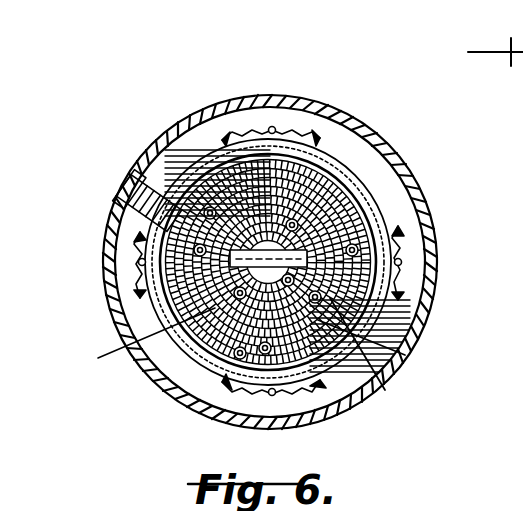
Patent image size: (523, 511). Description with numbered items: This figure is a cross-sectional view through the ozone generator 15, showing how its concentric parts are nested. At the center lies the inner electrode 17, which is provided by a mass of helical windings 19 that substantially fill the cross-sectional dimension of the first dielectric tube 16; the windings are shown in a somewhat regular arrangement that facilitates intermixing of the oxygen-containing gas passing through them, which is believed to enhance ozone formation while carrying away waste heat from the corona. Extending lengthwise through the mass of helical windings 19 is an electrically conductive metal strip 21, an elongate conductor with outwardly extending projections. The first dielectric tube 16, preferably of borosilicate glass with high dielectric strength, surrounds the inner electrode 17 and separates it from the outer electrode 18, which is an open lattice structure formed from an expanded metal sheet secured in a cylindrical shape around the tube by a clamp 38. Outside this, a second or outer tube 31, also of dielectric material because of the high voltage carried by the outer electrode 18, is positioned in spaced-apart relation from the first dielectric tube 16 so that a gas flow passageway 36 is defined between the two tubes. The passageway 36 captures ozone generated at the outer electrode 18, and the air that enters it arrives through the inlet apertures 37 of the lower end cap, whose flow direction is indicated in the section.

The ozone generator 15 is at (210, 78).
The first dielectric tube 16 is at (215, 160).
The inner electrode 17 is at (327, 345).
The outer electrode 18 is at (418, 333).
The helical windings 19 is at (413, 374).
The electrically conductive metal strip 21 is at (368, 190).
The outer tube 31 is at (397, 152).
The gas flow passageway 36 is at (180, 372).
The inlet apertures 37 is at (272, 127).
The clamp 38 is at (134, 224).